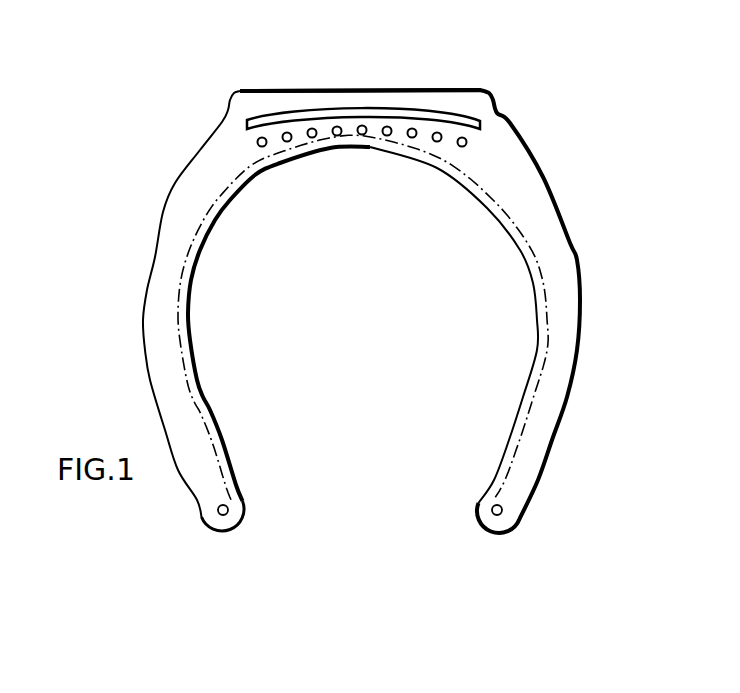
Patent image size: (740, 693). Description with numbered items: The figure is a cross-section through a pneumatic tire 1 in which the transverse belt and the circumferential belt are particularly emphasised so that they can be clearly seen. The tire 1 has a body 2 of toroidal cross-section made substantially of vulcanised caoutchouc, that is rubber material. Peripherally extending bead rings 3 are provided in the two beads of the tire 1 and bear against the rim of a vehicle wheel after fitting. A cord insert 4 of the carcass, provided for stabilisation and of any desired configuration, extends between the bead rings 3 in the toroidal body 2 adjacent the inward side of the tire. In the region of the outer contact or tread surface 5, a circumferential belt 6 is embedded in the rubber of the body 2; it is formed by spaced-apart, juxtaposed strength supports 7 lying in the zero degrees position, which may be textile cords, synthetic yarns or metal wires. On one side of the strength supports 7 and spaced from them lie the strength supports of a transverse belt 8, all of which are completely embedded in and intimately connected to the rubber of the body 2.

The pneumatic tire 1 is at (587, 238).
The body 2 is at (183, 215).
The bead rings 3 is at (217, 518).
The cord insert 4 is at (181, 312).
The tread surface 5 is at (388, 89).
The circumferential belt 6 is at (480, 143).
The strength supports 7 is at (257, 142).
The transverse belt 8 is at (273, 117).